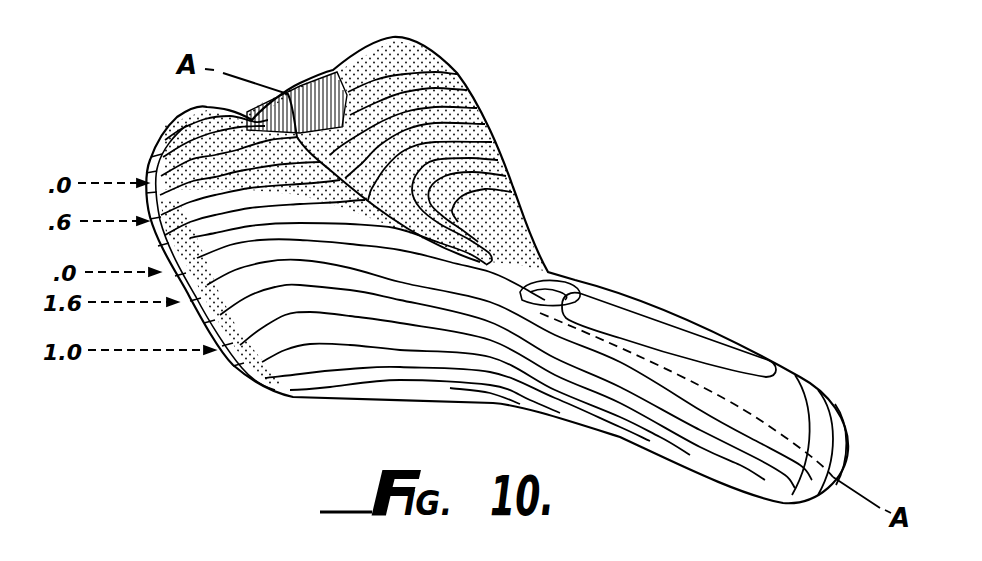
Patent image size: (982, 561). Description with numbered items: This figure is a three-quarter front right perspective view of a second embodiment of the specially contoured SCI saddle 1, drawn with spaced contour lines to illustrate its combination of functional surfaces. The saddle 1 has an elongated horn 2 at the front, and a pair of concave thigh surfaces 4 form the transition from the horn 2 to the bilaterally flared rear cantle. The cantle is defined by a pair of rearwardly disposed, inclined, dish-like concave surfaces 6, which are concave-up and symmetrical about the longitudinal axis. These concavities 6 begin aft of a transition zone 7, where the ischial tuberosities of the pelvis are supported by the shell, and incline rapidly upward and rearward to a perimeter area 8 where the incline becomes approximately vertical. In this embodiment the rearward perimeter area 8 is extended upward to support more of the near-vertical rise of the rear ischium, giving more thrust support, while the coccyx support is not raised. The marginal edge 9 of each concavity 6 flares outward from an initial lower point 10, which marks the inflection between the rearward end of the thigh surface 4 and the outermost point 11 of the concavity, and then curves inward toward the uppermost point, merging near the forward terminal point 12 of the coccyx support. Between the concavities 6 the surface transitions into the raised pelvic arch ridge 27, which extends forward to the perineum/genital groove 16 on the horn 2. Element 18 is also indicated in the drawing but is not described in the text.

The SCI saddle 1 is at (624, 247).
The elongated horn 2 is at (738, 328).
The concave thigh surfaces 4 is at (437, 403).
The concave surfaces 6 is at (233, 262).
The transition zone 7 is at (257, 328).
The perimeter area 8 is at (197, 118).
The marginal edge 9 is at (150, 165).
The initial lower point 10 is at (263, 347).
The outermost point 11 is at (185, 248).
The forward terminal point 12 is at (321, 202).
The perineum/genital groove 16 is at (549, 286).
The nose recess 18 is at (767, 370).
The pelvic arch ridge 27 is at (426, 271).